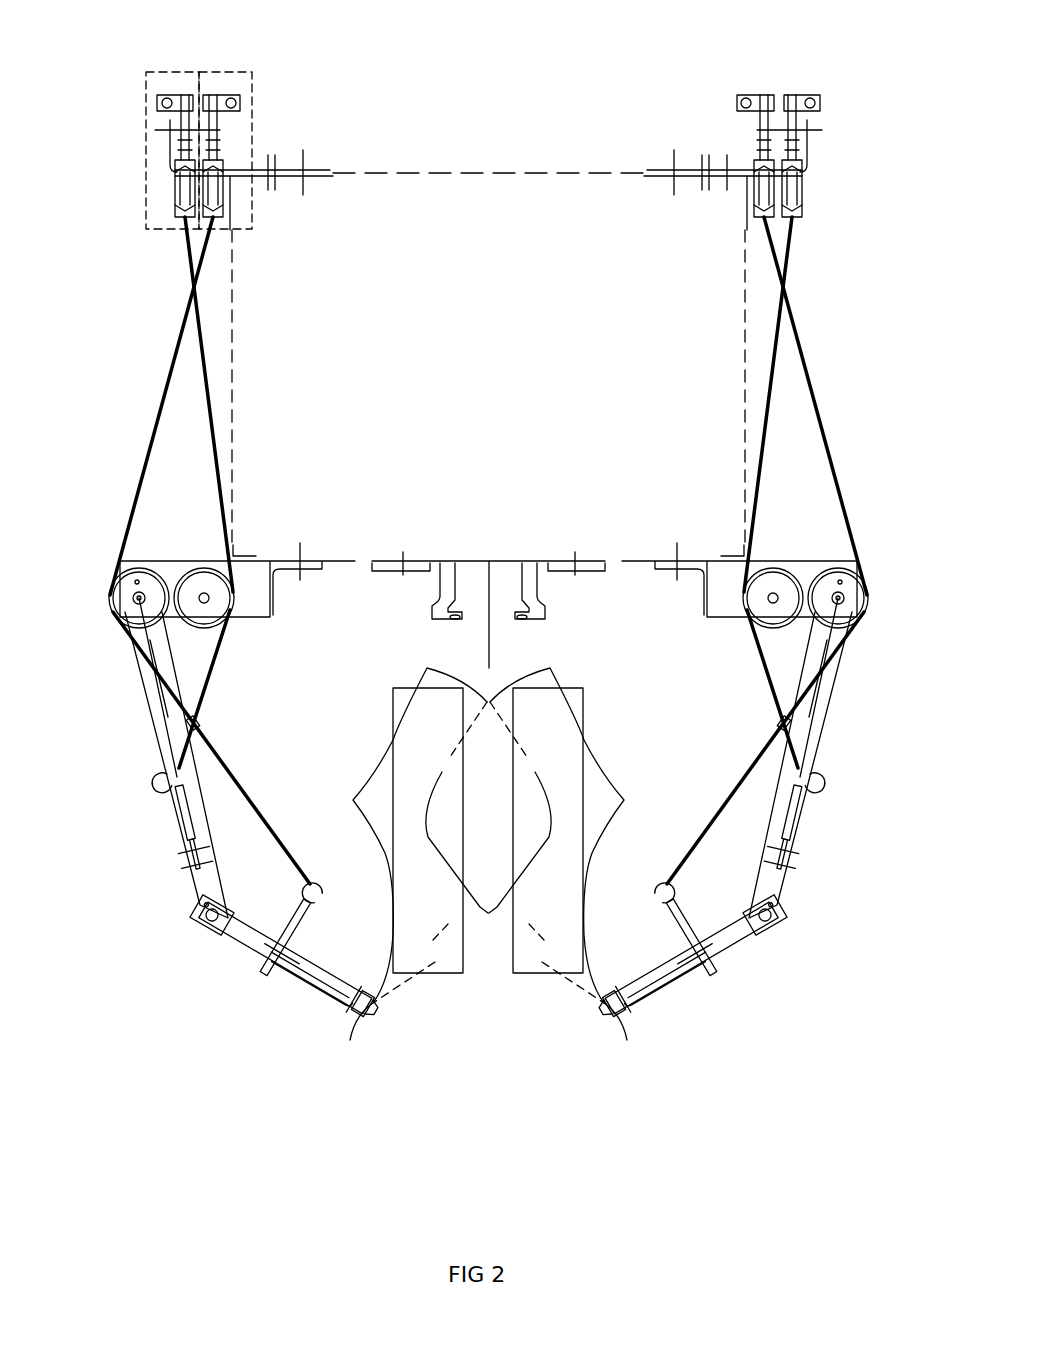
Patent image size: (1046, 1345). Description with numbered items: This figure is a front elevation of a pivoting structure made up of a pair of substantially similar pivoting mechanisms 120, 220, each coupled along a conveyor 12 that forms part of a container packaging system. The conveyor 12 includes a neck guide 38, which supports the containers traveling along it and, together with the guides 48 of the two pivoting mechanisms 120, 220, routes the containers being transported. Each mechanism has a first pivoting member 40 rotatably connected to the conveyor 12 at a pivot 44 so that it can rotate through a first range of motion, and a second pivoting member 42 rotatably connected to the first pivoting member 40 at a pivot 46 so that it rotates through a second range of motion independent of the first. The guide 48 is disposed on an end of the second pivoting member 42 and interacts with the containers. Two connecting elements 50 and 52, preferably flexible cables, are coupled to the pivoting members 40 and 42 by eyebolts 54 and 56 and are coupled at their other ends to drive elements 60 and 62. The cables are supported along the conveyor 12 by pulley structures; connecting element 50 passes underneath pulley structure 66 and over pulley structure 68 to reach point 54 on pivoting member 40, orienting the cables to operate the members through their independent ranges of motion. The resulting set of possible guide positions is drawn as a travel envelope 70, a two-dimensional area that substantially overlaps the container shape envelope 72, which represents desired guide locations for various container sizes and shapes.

The conveyor 12 is at (521, 405).
The neck guide 38 is at (533, 583).
The first pivoting member 40 is at (160, 732).
The second pivoting member 42 is at (250, 960).
The pivot 44 is at (140, 606).
The pivot 46 is at (196, 920).
The guide 48 is at (360, 1010).
The connecting element 50 is at (143, 430).
The connecting element 52 is at (212, 445).
The eyebolt 54 is at (175, 785).
The eyebolt 56 is at (310, 880).
The drive element 60 is at (232, 78).
The drive element 62 is at (178, 78).
The pulley structure 66 is at (140, 572).
The pulley structure 68 is at (215, 560).
The travel envelope 70 is at (407, 987).
The container shape envelope 72 is at (463, 962).
The pivoting mechanism 120 is at (132, 352).
The pivoting mechanism 220 is at (875, 457).